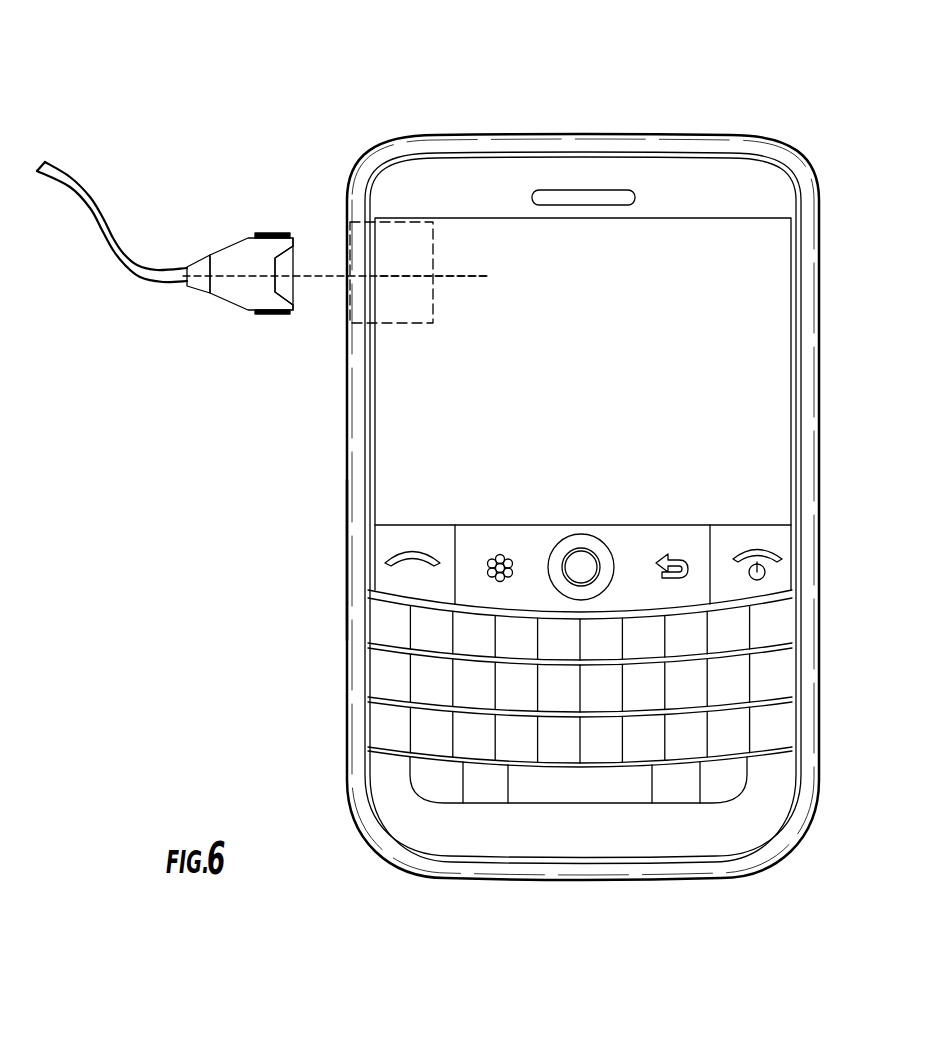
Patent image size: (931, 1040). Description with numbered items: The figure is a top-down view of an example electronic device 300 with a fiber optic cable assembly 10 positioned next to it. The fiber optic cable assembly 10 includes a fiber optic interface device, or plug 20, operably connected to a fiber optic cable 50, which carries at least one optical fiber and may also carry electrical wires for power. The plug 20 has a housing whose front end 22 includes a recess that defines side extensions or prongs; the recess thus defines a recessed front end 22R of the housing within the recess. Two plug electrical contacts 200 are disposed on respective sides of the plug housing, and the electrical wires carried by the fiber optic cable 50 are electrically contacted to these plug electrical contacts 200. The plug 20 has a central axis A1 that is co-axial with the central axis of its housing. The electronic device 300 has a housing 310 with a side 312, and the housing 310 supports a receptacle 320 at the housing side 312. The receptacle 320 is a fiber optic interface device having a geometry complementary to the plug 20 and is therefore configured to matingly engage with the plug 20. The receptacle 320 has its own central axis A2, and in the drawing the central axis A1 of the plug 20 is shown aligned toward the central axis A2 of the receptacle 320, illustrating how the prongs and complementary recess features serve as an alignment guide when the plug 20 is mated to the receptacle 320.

The fiber optic cable assembly 10 is at (117, 127).
The fiber optic cable 50 is at (108, 237).
The fiber optic interface device 20 is at (240, 250).
The front end 22 is at (292, 240).
The recessed front end 22R is at (277, 271).
The plug electrical contacts 200 is at (273, 233).
The central axis A1 is at (247, 270).
The electronic device 300 is at (572, 113).
The housing 310 is at (475, 177).
The side 312 is at (347, 558).
The receptacle 320 is at (404, 336).
The central axis A2 is at (463, 283).